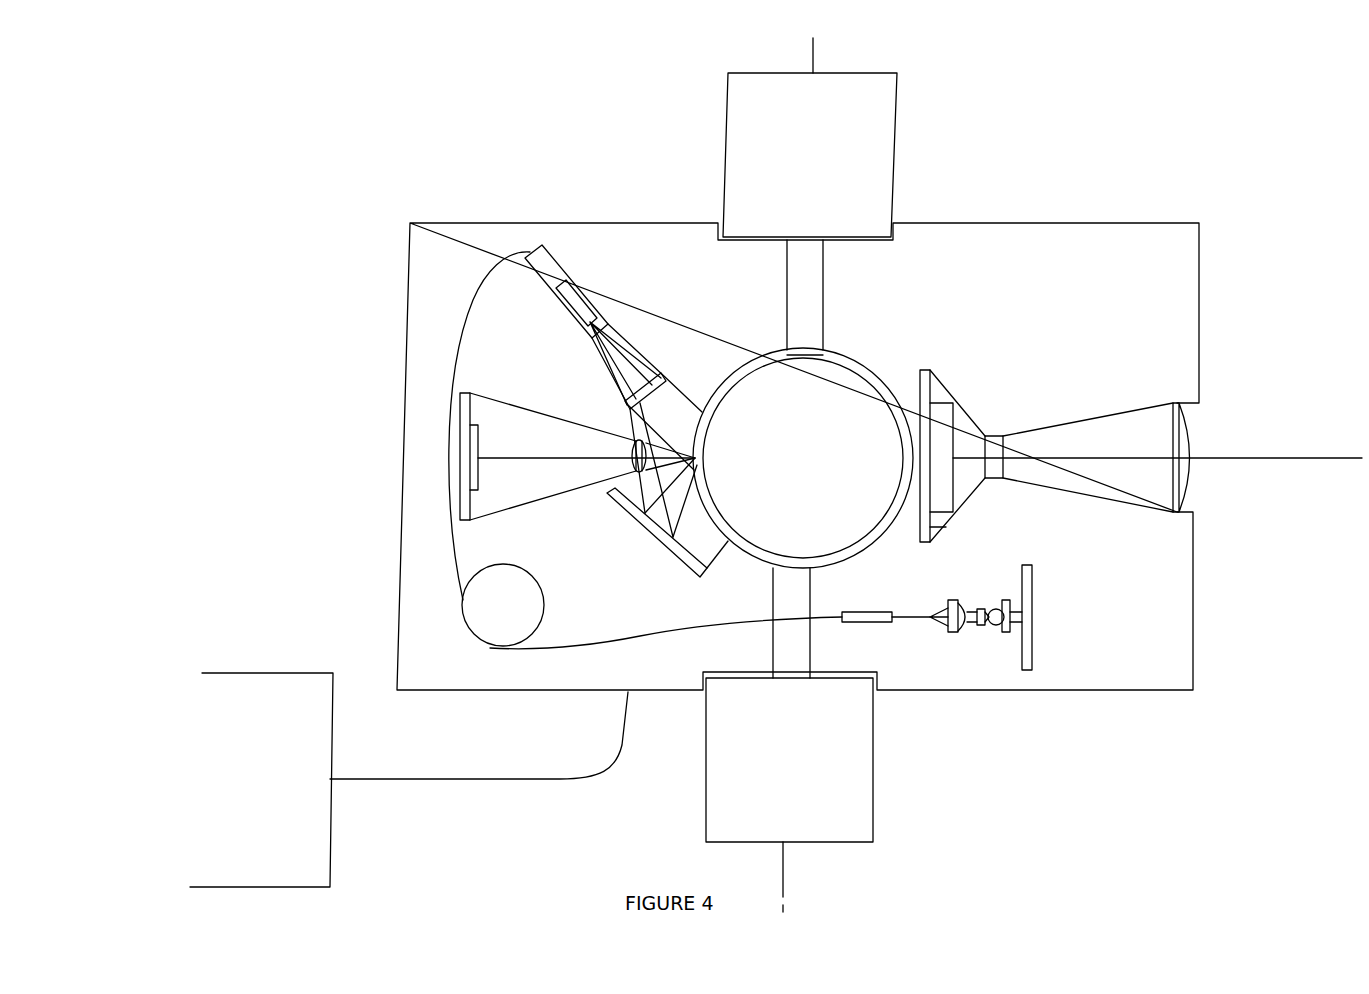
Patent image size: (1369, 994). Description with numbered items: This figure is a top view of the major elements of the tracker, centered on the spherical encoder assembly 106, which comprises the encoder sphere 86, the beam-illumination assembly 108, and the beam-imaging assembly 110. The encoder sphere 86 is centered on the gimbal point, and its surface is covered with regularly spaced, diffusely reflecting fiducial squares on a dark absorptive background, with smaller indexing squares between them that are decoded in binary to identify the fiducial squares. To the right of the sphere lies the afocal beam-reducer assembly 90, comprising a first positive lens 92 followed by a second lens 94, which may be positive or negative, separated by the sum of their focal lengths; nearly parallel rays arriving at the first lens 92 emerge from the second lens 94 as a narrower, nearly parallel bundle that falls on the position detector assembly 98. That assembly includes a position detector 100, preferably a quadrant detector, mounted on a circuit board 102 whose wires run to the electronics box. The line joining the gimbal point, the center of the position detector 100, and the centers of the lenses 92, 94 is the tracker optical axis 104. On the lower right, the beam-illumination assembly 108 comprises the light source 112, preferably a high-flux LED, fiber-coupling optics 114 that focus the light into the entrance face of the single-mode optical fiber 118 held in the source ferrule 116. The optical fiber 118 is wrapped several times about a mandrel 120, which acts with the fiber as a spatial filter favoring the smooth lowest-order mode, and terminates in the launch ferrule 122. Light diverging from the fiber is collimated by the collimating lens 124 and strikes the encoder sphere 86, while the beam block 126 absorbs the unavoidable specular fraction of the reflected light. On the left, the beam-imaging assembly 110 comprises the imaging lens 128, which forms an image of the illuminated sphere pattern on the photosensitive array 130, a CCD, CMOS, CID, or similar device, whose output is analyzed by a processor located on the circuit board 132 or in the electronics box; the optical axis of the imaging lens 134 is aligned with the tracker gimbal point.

The encoder sphere 86 is at (740, 352).
The afocal beam-reducer assembly 90 is at (1113, 315).
The first lens 92 is at (1193, 400).
The second lens 94 is at (997, 433).
The position detector assembly 98 is at (960, 350).
The position detector 100 is at (953, 490).
The circuit board 102 is at (933, 527).
The tracker optical axis 104 is at (1210, 458).
The spherical encoder assembly 106 is at (552, 196).
The beam-illumination assembly 108 is at (1094, 574).
The beam-imaging assembly 110 is at (442, 457).
The light source 112 is at (1000, 633).
The fiber-coupling optics 114 is at (975, 632).
The source ferrule 116 is at (872, 612).
The single-mode optical fiber 118 is at (683, 608).
The mandrel 120 is at (490, 650).
The launch ferrule 122 is at (579, 290).
The collimating lens 124 is at (650, 392).
The beam block 126 is at (658, 538).
The imaging lens 128 is at (635, 441).
The photosensitive array 130 is at (480, 468).
The circuit board 132 is at (470, 507).
The optical axis of the imaging lens 134 is at (537, 458).